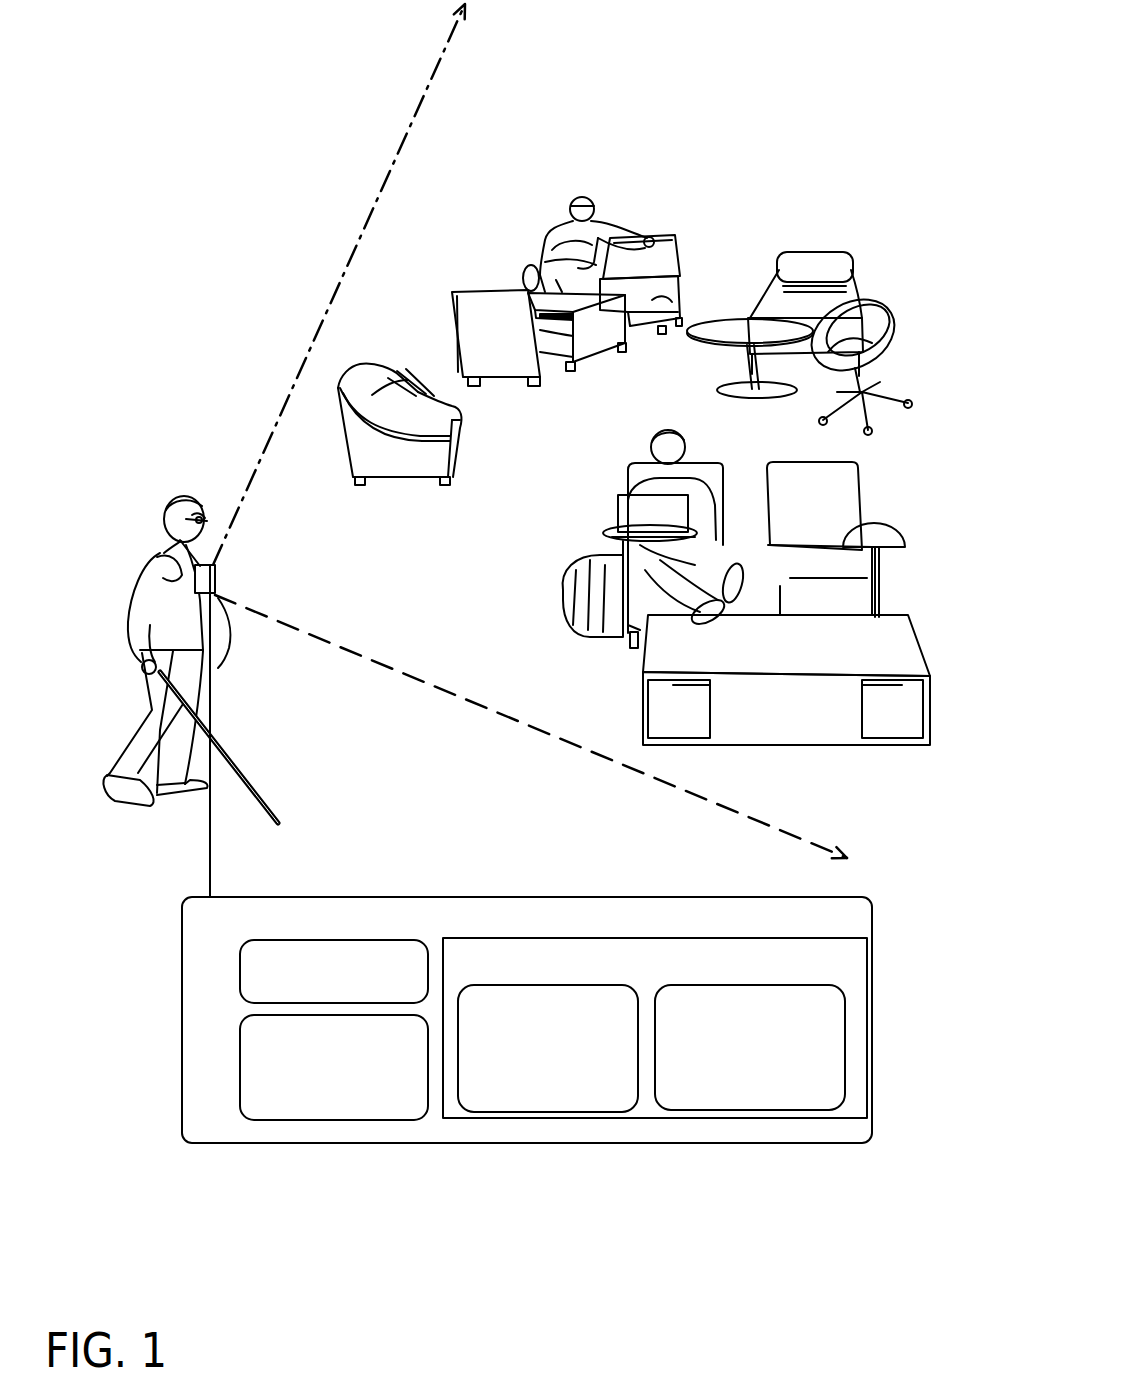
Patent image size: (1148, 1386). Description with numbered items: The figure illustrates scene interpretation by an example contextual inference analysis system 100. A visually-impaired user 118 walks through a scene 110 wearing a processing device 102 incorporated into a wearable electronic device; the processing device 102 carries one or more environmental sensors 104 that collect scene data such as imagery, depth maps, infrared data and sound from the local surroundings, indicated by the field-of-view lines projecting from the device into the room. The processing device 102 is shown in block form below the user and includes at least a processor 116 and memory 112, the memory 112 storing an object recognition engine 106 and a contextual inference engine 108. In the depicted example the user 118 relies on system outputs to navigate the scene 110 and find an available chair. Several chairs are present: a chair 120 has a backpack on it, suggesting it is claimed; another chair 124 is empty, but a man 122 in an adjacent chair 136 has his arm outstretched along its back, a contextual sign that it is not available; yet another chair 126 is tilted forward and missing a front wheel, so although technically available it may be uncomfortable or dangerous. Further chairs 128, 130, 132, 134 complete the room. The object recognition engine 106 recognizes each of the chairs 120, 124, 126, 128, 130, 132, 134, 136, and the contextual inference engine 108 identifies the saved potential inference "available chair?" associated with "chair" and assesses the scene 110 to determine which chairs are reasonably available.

The contextual inference analysis system 100 is at (820, 113).
The processing device 102 is at (214, 596).
The environmental sensors 104 is at (316, 1106).
The object recognition engine 106 is at (529, 1106).
The contextual inference engine 108 is at (731, 1106).
The scene 110 is at (460, 596).
The memory 112 is at (582, 972).
The processor 116 is at (316, 1002).
The visually-impaired user 118 is at (142, 568).
The chair 120 is at (356, 460).
The man 122 is at (592, 198).
The chair 124 is at (676, 240).
The chair 126 is at (876, 298).
The chair 128 is at (860, 498).
The chair 130 is at (817, 251).
The chair 132 is at (507, 378).
The chair 134 is at (622, 483).
The chair 136 is at (515, 228).